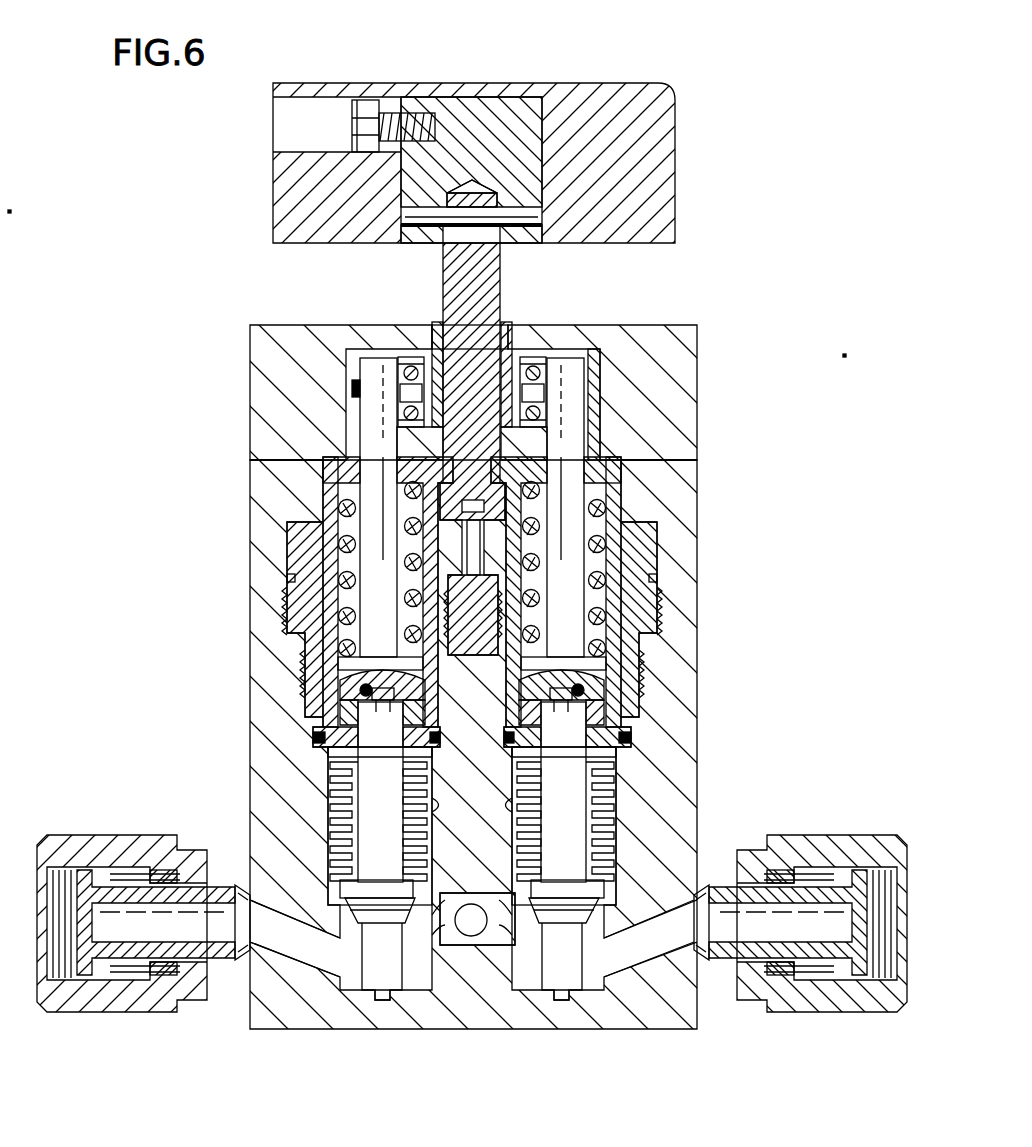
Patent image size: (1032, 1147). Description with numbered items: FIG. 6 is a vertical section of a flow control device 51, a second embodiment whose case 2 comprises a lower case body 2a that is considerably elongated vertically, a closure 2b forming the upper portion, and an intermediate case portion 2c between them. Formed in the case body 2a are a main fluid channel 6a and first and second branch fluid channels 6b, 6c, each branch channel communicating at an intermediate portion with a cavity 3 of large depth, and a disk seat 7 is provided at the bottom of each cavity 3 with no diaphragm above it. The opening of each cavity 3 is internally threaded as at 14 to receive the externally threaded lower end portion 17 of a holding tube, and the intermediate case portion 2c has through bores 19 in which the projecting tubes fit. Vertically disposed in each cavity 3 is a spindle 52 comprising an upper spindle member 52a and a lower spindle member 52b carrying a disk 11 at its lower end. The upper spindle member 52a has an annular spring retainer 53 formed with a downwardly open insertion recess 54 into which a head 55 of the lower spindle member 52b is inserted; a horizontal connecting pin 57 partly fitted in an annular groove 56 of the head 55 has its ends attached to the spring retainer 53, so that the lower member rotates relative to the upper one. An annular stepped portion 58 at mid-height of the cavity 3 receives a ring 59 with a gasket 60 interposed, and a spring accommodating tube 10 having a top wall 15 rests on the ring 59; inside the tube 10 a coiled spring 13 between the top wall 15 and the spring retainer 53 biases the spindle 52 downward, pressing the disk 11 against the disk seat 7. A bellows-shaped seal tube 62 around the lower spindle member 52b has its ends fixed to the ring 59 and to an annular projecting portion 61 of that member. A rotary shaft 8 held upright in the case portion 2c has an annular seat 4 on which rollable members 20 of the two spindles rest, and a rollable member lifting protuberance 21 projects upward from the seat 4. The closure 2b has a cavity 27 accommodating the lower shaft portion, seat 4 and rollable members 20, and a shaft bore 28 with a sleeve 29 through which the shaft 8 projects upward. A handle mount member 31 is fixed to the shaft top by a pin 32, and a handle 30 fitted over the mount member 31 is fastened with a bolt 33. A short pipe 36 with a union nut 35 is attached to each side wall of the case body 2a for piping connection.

The case 2 is at (516, 658).
The case body 2a is at (697, 830).
The closure portion 2b is at (697, 325).
The intermediate case portion 2c is at (690, 462).
The cavity 3 is at (330, 850).
The annular seat 4 is at (620, 345).
The main fluid channel 6a is at (471, 936).
The first branch fluid channel 6b is at (322, 952).
The second branch fluid channel 6c is at (620, 960).
The disk seat 7 is at (418, 925).
The rotary shaft 8 is at (443, 262).
The spring accommodating tube 10 is at (340, 510).
The disk 11 is at (383, 915).
The coiled spring 13 is at (300, 545).
The internally threaded opening portion 14 is at (288, 612).
The top wall 15 is at (330, 470).
The externally threaded lower end portion 17 is at (300, 650).
The through bore 19 is at (292, 572).
The rollable member 20 is at (405, 365).
The rollable member lifting protuberance 21 is at (397, 387).
The cavity 27 is at (598, 380).
The shaft bore 28 is at (505, 340).
The sleeve 29 is at (437, 340).
The handle 30 is at (675, 163).
The handle mount member 31 is at (500, 120).
The pin 32 is at (528, 228).
The bolt 33 is at (364, 112).
The union nut 35 is at (120, 1012).
The short pipe 36 is at (222, 960).
The flow control device 51 is at (504, 140).
The spindle 52 is at (360, 430).
The upper spindle member 52a is at (360, 445).
The lower spindle member 52b is at (330, 800).
The annular spring retainer 53 is at (338, 664).
The insertion recess 54 is at (425, 700).
The head 55 is at (360, 690).
The annular groove 56 is at (385, 704).
The horizontal connecting pin 57 is at (372, 695).
The annular stepped portion 58 is at (445, 700).
The ring 59 is at (332, 768).
The gasket 60 is at (315, 737).
The annular projecting portion 61 is at (240, 886).
The bellows-shaped seal tube 62 is at (512, 805).